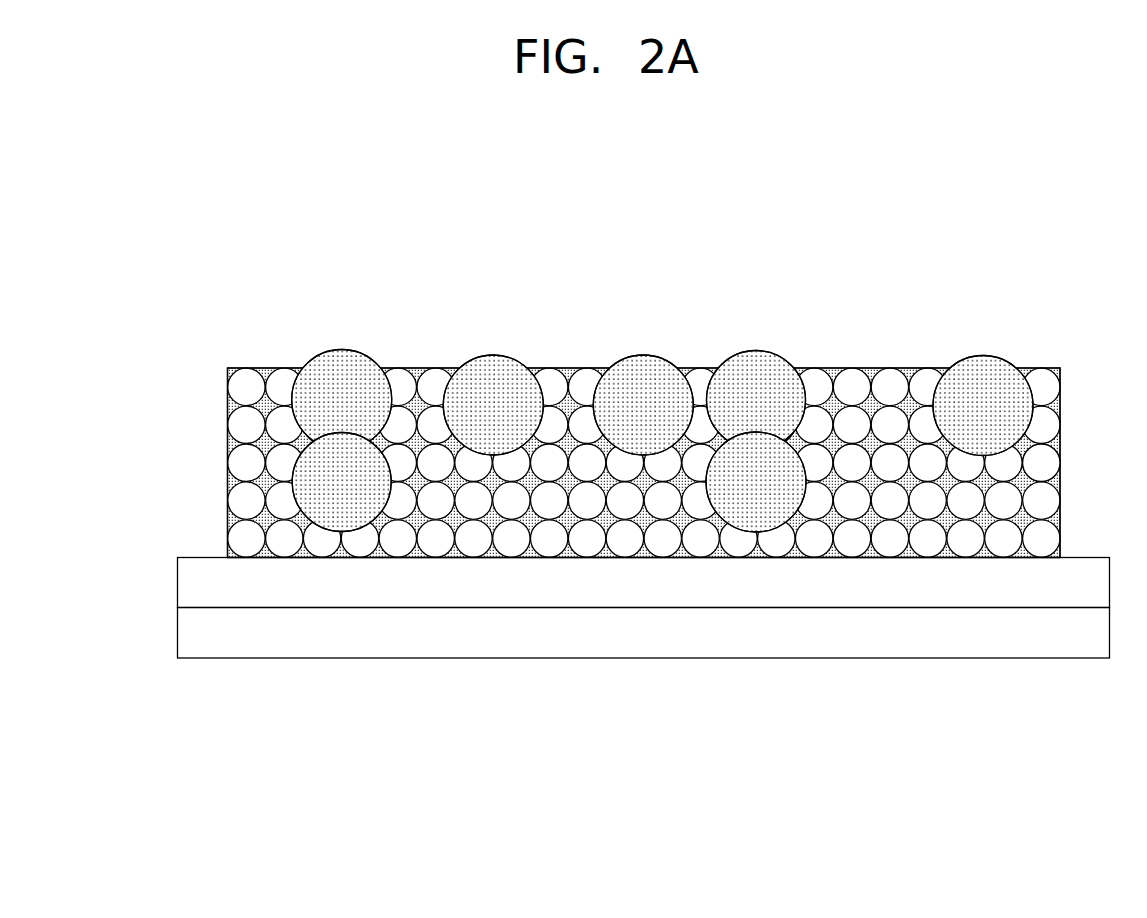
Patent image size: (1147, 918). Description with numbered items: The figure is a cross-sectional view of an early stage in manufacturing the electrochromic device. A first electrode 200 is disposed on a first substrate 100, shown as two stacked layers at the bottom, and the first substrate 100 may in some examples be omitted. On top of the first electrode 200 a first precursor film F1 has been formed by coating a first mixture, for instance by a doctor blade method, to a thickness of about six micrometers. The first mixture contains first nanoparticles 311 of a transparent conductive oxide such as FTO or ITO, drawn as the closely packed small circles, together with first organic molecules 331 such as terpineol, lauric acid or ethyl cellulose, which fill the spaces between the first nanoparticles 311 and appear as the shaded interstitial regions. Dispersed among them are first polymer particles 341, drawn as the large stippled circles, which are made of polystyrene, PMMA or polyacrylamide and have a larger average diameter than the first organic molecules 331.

The first precursor film F1 is at (210, 368).
The first polymer particles 341 is at (981, 369).
The first nanoparticles 311 is at (1047, 463).
The first organic molecules 331 is at (1030, 510).
The first electrode 200 is at (188, 582).
The first substrate 100 is at (188, 635).